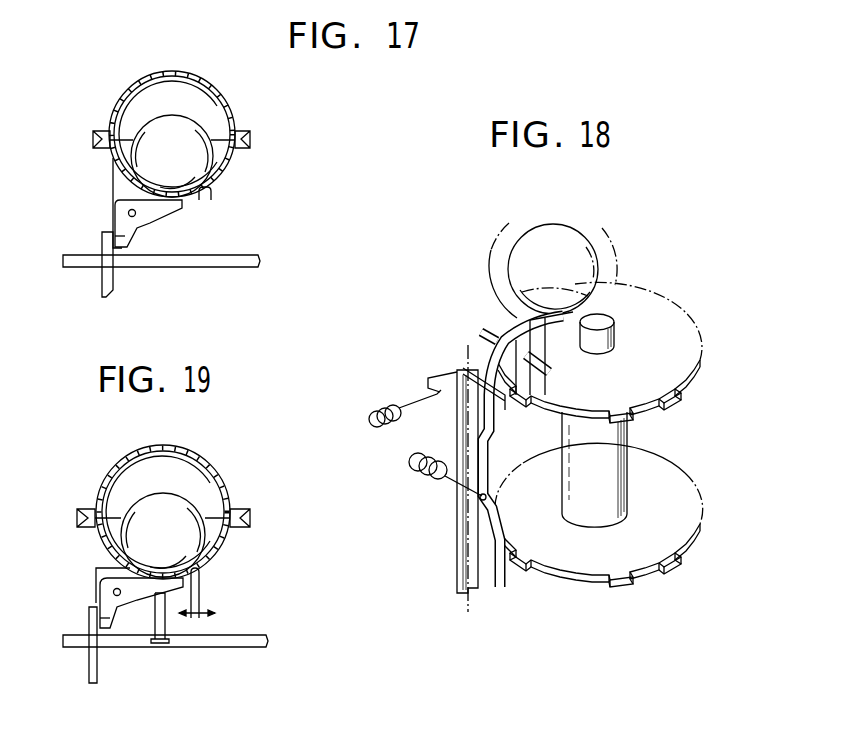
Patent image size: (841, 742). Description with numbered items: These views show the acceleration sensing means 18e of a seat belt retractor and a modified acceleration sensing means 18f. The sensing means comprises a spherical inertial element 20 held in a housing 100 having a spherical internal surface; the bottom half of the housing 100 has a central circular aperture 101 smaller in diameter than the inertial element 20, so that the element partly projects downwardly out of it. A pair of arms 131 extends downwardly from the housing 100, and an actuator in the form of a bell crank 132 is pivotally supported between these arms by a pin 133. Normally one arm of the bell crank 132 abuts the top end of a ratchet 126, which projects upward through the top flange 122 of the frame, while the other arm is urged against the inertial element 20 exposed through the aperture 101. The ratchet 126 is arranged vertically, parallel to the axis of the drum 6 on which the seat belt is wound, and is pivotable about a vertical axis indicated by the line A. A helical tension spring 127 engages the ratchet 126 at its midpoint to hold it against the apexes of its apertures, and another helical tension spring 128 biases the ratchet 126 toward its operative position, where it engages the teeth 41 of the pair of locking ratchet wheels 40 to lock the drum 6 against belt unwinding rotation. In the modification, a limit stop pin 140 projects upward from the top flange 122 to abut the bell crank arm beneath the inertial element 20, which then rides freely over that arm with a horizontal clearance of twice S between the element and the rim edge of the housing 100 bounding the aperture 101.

In FIG. 17, the acceleration sensing means 18e is at (106, 112).
In FIG. 18, the acceleration sensing means 18e is at (488, 255).
In FIG. 19, the acceleration sensing means 18f is at (99, 472).
In FIG. 17, the housing 100 is at (205, 92).
In FIG. 19, the housing 100 is at (202, 457).
In FIG. 17, the spherical inertial element 20 is at (205, 128).
In FIG. 19, the spherical inertial element 20 is at (190, 502).
In FIG. 18, the spherical inertial element 20 is at (556, 226).
In FIG. 17, the arms 131 is at (118, 187).
In FIG. 19, the arms 131 is at (100, 577).
In FIG. 17, the bell crank 132 is at (127, 238).
In FIG. 19, the bell crank 132 is at (108, 614).
In FIG. 18, the bell crank 132 is at (520, 332).
In FIG. 17, the pin 133 is at (127, 213).
In FIG. 19, the pin 133 is at (119, 597).
In FIG. 18, the pin 133 is at (485, 336).
In FIG. 17, the circular aperture 101 is at (203, 194).
In FIG. 19, the circular aperture 101 is at (200, 570).
In FIG. 17, the top flange 122 is at (221, 254).
In FIG. 19, the top flange 122 is at (223, 640).
In FIG. 17, the ratchet 126 is at (110, 280).
In FIG. 19, the ratchet 126 is at (92, 664).
In FIG. 18, the ratchet 126 is at (457, 538).
In FIG. 19, the pin 140 is at (160, 630).
In FIG. 19, the clearance S is at (203, 599).
In FIG. 18, the locking ratchet wheels 40 is at (672, 347).
In FIG. 18, the teeth 41 is at (666, 400).
In FIG. 18, the drum 6 is at (575, 516).
In FIG. 18, the helical tension spring 127 is at (410, 470).
In FIG. 18, the helical tension spring 128 is at (376, 411).
In FIG. 18, the line A— A is at (452, 483).